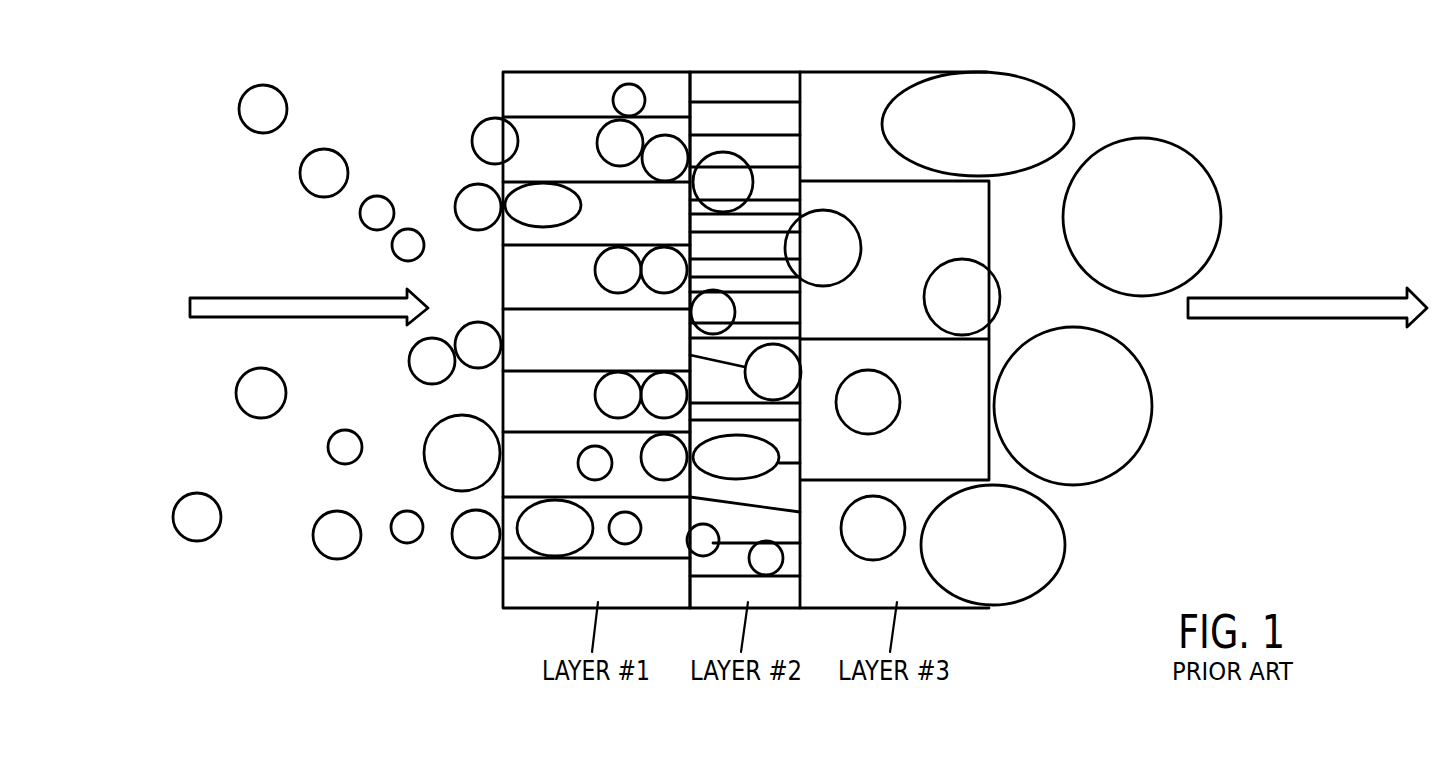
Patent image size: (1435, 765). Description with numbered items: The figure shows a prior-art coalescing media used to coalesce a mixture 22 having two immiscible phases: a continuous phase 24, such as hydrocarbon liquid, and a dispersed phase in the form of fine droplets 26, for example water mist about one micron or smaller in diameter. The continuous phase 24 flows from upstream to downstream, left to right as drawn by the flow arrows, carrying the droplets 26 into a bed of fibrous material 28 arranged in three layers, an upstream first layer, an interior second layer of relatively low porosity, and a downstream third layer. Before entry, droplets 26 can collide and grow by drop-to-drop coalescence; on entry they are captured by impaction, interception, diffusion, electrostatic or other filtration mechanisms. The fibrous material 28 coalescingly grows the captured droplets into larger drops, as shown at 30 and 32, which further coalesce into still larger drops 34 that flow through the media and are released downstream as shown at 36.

The mixture 22 is at (162, 478).
The continuous phase 24 is at (205, 295).
The droplets 26 is at (412, 228).
The fibrous material 28 is at (523, 77).
The larger drop 30 is at (628, 92).
The larger drop 32 is at (720, 158).
The larger drops 34 is at (1016, 85).
The released drops 36 is at (1177, 162).